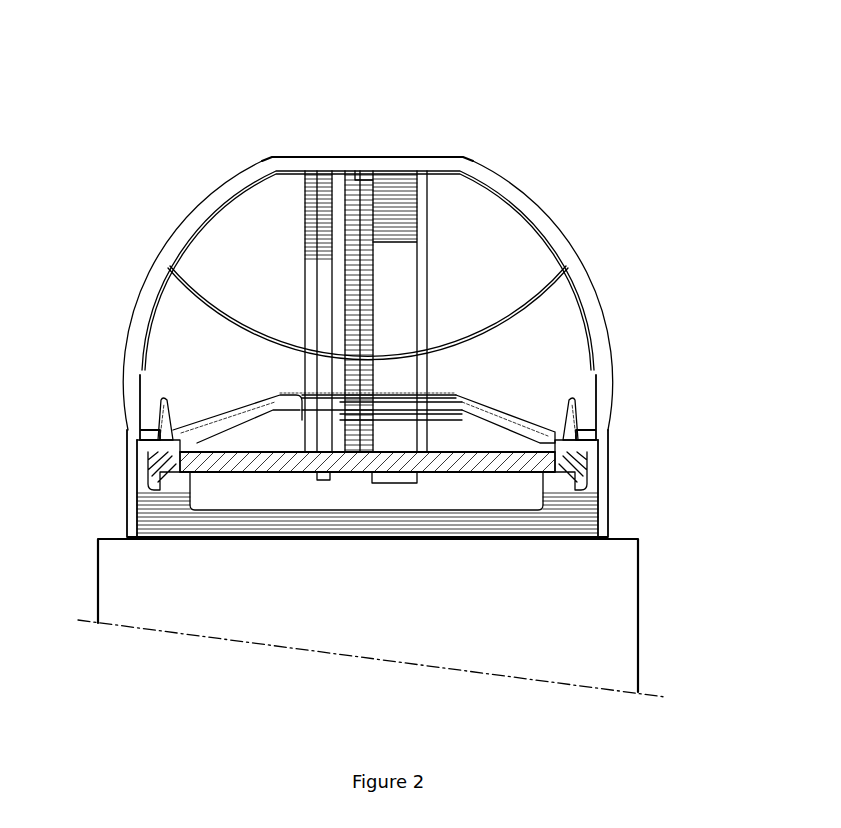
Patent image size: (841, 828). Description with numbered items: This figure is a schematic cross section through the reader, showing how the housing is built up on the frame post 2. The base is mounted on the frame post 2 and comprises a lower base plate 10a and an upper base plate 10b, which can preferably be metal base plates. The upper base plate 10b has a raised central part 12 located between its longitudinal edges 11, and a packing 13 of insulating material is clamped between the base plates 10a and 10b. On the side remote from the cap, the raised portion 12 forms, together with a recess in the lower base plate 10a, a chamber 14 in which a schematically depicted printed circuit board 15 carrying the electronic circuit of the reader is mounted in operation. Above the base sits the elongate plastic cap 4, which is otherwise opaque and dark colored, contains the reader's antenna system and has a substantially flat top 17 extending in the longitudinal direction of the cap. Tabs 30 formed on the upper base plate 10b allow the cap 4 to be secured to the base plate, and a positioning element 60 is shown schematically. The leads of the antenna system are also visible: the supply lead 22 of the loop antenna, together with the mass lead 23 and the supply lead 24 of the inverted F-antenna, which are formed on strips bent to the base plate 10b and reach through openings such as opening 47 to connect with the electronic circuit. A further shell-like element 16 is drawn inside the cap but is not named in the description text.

The frame post 2 is at (397, 650).
The elongate plastic cap 4 is at (547, 228).
The lower base plate 10a is at (143, 500).
The upper base plate 10b is at (485, 405).
The longitudinal edges 11 is at (162, 420).
The raised central part 12 is at (438, 390).
The packing 13 is at (160, 462).
The chamber 14 is at (285, 497).
The printed circuit board 15 is at (416, 462).
The inner shell 16 is at (182, 223).
The flat top 17 is at (393, 153).
The supply lead 22 is at (344, 243).
The mass lead 23 is at (398, 236).
The supply lead 24 is at (321, 240).
The tabs 30 is at (150, 432).
The opening 47 is at (243, 330).
The positioning element 60 is at (297, 397).